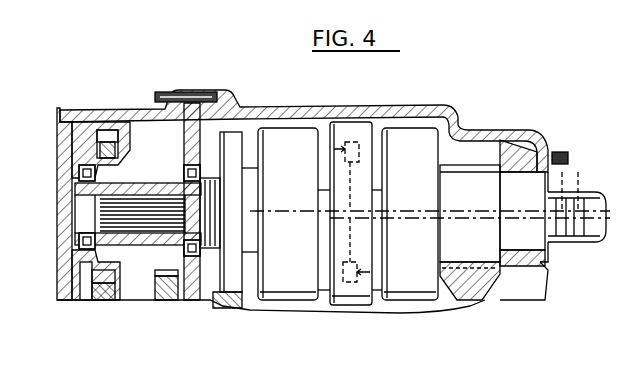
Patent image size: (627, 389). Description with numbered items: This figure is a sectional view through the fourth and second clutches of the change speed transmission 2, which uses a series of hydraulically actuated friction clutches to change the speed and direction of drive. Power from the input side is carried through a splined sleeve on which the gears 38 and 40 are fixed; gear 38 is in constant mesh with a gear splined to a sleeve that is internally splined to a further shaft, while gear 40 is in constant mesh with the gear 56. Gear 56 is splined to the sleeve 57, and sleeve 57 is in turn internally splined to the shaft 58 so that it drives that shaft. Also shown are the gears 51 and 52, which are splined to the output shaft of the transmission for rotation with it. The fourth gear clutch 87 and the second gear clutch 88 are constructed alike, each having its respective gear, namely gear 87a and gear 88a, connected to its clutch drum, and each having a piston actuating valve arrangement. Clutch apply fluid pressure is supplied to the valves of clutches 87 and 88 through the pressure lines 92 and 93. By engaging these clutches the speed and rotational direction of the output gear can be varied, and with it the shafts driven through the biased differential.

The change speed transmission 2 is at (425, 110).
The gear 38 is at (163, 293).
The gear 40 is at (103, 301).
The gear 51 is at (224, 309).
The gear 52 is at (478, 300).
The gear 56 is at (112, 162).
The sleeve 57 is at (158, 184).
The shaft 58 is at (160, 218).
The fourth gear clutch 87 is at (305, 154).
The gear 87a is at (235, 136).
The second gear clutch 88 is at (424, 156).
The gear 88a is at (456, 170).
The pressure line 92 is at (406, 210).
The pressure line 93 is at (406, 218).